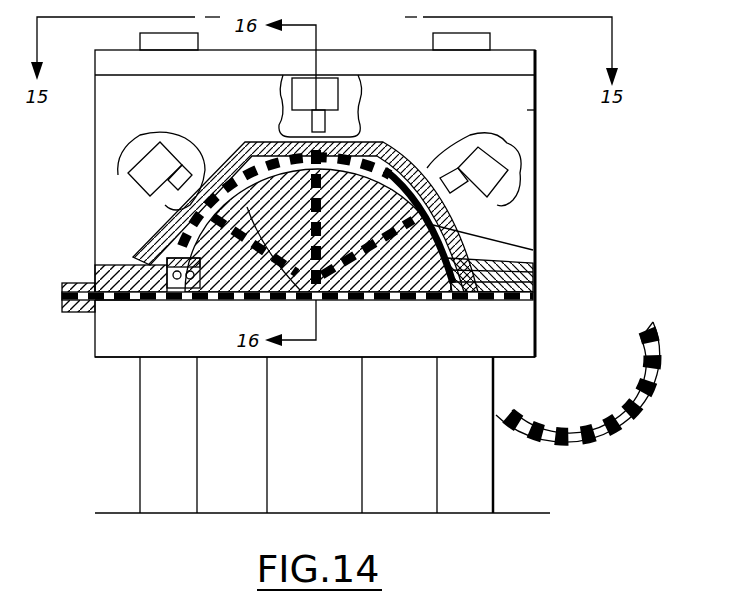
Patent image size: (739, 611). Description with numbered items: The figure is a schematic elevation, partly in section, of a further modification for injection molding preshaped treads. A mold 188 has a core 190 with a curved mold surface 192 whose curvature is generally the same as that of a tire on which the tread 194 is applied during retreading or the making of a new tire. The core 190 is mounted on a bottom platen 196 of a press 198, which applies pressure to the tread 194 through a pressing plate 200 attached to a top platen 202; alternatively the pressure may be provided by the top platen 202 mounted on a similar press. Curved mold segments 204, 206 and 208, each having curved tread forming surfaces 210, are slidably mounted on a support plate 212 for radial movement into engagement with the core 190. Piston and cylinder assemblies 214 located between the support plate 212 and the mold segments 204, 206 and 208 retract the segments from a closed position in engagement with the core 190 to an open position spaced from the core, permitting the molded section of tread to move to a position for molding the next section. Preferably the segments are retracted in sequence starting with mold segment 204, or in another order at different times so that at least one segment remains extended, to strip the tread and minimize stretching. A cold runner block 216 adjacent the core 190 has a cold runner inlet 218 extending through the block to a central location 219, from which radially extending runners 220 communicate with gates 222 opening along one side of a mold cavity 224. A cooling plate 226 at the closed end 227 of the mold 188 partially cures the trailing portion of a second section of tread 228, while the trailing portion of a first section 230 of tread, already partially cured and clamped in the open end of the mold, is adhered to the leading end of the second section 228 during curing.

The mold 188 is at (535, 90).
The core 190 is at (418, 283).
The curved mold surface 192 is at (514, 266).
The tread 194 is at (532, 447).
The bottom platen 196 is at (522, 341).
The press 198 is at (273, 498).
The pressing plate 200 is at (527, 110).
The top platen 202 is at (527, 62).
The curved mold segment 204 is at (165, 257).
The curved mold segment 206 is at (262, 140).
The curved mold segment 208 is at (410, 175).
The curved tread forming surface 210 is at (513, 238).
The support plate 212 is at (122, 171).
The piston and cylinder assembly 214 is at (330, 87).
The cold runner block 216 is at (102, 315).
The cold runner inlet 218 is at (62, 305).
The central location 219 is at (320, 298).
The radially extending runner 220 is at (378, 287).
The gate 222 is at (382, 165).
The mold cavity 224 is at (525, 280).
The cooling plate 226 is at (133, 300).
The closed end 227 is at (167, 262).
The second section of tread 228 is at (238, 175).
The first section of tread 230 is at (530, 290).